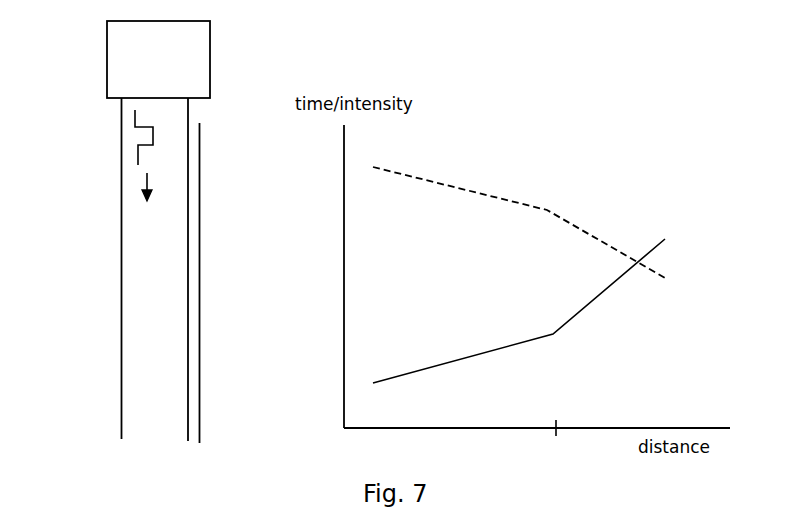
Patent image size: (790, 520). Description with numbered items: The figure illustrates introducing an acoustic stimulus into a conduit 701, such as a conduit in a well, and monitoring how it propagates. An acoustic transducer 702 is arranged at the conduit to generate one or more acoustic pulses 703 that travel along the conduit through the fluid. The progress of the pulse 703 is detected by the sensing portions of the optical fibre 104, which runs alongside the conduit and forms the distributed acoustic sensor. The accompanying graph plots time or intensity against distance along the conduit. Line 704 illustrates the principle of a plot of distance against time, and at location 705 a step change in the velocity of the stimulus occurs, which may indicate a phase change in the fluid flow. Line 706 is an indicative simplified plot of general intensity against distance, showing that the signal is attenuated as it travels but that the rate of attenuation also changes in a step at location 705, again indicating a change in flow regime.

The optical fibre 104 is at (200, 160).
The conduit 701 is at (122, 203).
The acoustic transducer 702 is at (140, 82).
The acoustic pulse 703 is at (135, 130).
The line illustrating plot of distance against time 704 is at (537, 305).
The location 705 is at (561, 439).
The line illustrating plot of intensity against distance 706 is at (537, 232).